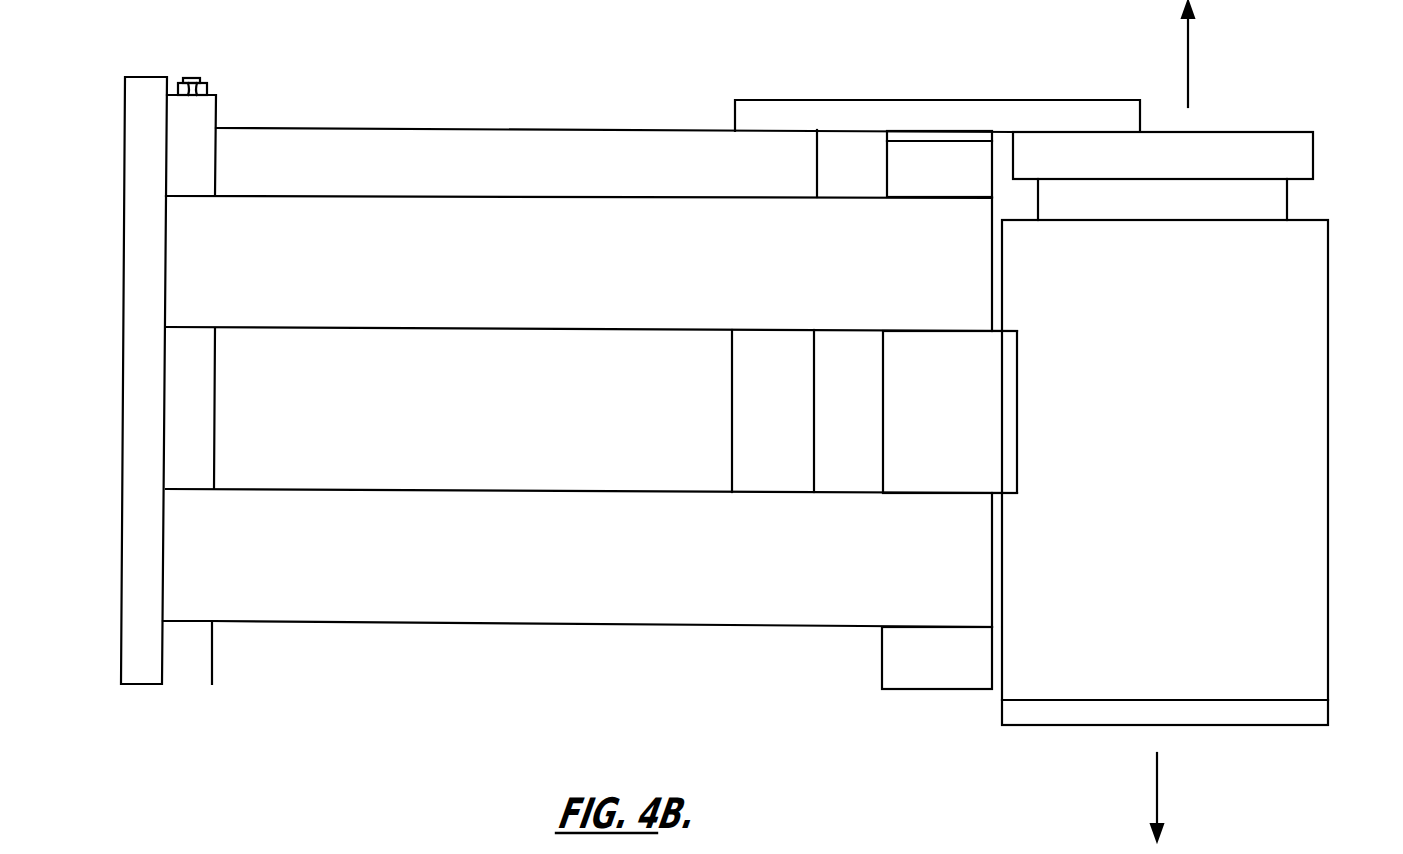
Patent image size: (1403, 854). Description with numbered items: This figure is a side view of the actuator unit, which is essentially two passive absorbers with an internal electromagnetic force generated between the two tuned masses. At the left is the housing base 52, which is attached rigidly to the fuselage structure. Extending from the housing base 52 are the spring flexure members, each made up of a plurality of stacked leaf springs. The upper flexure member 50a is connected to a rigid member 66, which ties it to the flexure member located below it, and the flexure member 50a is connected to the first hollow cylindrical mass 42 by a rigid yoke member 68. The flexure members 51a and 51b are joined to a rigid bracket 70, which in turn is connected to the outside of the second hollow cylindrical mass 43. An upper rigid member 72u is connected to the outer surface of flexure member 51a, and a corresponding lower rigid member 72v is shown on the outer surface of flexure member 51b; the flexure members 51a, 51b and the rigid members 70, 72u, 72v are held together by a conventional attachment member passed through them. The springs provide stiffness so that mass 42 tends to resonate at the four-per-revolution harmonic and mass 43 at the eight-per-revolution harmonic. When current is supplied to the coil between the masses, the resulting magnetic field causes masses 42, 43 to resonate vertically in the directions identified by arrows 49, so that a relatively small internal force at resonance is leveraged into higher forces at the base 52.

The housing base 52 is at (143, 83).
The spring flexure member 50a is at (515, 177).
The spring flexure member 51a is at (513, 281).
The spring flexure member 51b is at (513, 572).
The rigid member 66 is at (748, 421).
The rigid bracket 70 is at (995, 413).
The upper rigid member 72u is at (902, 177).
The lower stop member 72v is at (913, 668).
The rigid yoke member 68 is at (846, 117).
The first hollow cylindrical mass 42 is at (1273, 205).
The second hollow cylindrical mass 43 is at (1301, 477).
The arrows 49 is at (1190, 57).